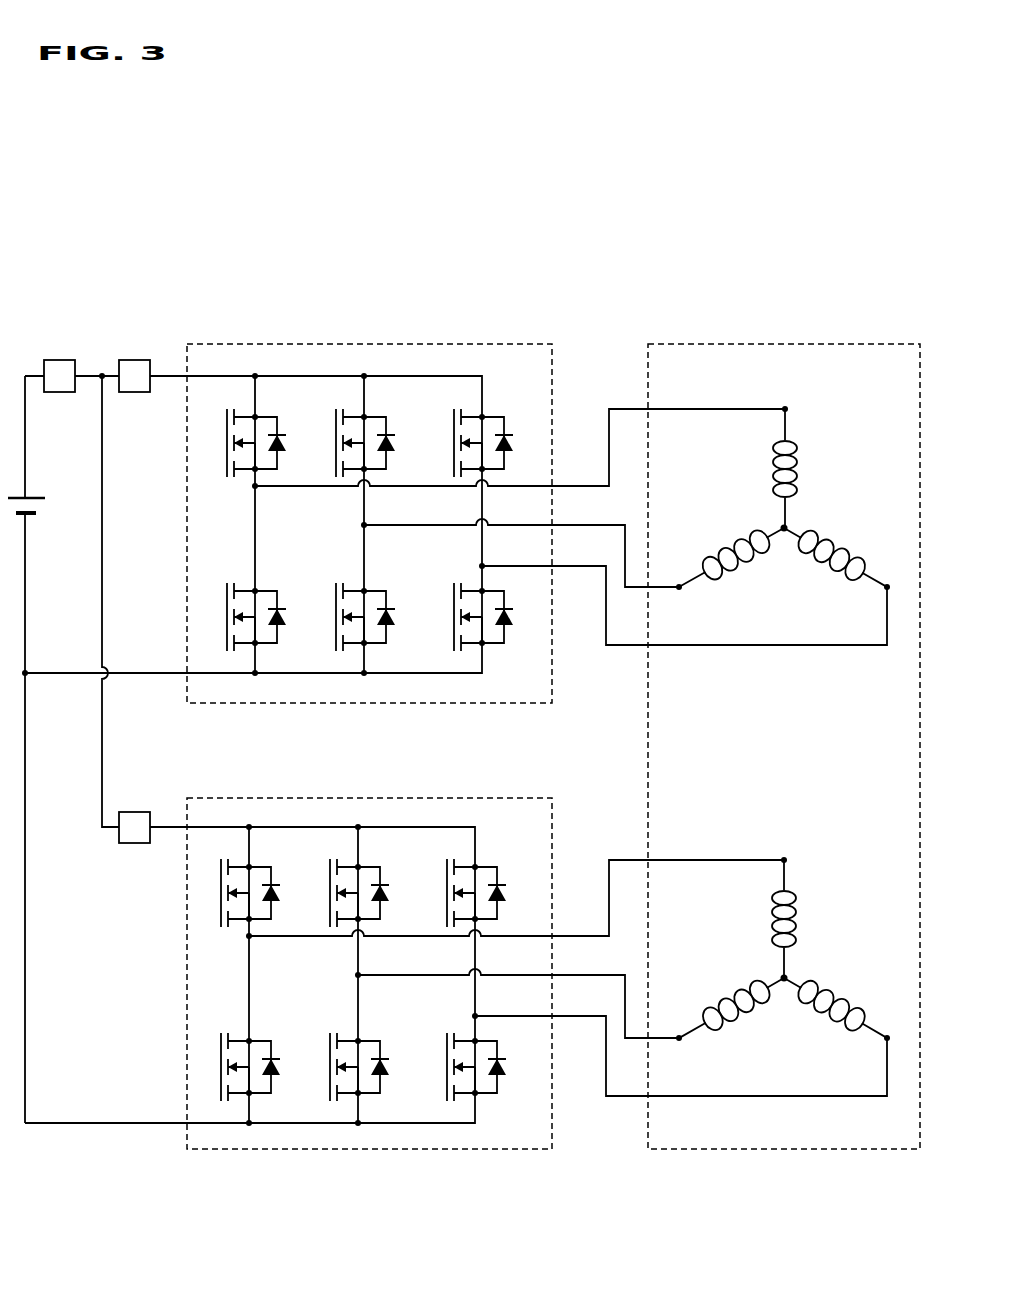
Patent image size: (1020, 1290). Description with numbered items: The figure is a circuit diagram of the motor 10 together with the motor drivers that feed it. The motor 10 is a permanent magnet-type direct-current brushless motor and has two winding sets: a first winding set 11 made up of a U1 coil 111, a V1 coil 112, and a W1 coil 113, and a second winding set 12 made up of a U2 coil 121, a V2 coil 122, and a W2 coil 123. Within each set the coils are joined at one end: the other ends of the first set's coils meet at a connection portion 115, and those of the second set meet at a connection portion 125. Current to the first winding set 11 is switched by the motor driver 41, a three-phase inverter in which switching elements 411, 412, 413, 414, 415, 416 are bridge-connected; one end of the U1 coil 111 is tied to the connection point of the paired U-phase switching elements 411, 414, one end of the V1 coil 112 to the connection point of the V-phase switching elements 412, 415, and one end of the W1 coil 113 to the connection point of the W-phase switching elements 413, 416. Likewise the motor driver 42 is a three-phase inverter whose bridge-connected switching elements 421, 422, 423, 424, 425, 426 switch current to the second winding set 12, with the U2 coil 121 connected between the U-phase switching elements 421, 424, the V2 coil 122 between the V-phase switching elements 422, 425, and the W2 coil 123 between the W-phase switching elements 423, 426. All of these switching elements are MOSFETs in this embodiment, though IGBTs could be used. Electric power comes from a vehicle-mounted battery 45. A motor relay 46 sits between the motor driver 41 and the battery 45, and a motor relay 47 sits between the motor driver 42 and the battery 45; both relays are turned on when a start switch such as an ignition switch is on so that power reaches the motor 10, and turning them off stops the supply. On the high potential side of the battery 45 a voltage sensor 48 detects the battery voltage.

The motor 10 is at (691, 343).
The first winding set 11 is at (783, 500).
The U1 coil 111 is at (798, 463).
The V1 coil 112 is at (740, 548).
The W1 coil 113 is at (835, 545).
The connection portion 115 is at (782, 535).
The second winding set 12 is at (784, 950).
The U2 coil 121 is at (798, 914).
The V2 coil 122 is at (740, 995).
The W2 coil 123 is at (835, 995).
The connection portion 125 is at (782, 985).
The motor driver 41 is at (214, 343).
The U-phase switching element 411 is at (258, 416).
The V-phase switching element 412 is at (367, 416).
The W-phase switching element 413 is at (486, 415).
The U-phase switching element 414 is at (260, 590).
The V-phase switching element 415 is at (368, 590).
The W-phase switching element 416 is at (504, 636).
The motor driver 42 is at (213, 797).
The U-phase switching element 421 is at (252, 866).
The V-phase switching element 422 is at (361, 866).
The W-phase switching element 423 is at (479, 865).
The U-phase switching element 424 is at (254, 1040).
The V-phase switching element 425 is at (362, 1040).
The W-phase switching element 426 is at (497, 1086).
The battery 45 is at (40, 496).
The motor relay 46 is at (132, 358).
The motor relay 47 is at (132, 810).
The voltage sensor 48 is at (58, 358).